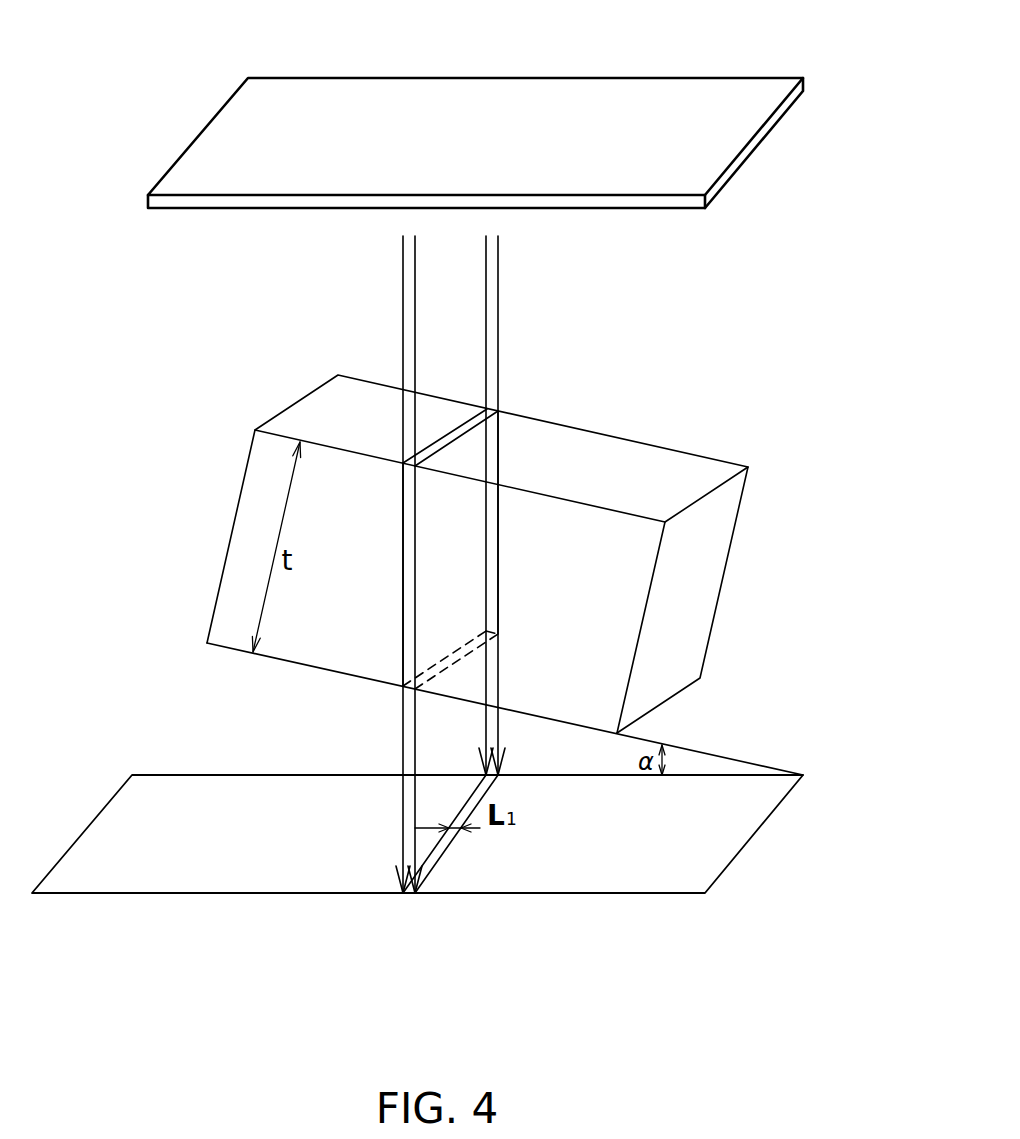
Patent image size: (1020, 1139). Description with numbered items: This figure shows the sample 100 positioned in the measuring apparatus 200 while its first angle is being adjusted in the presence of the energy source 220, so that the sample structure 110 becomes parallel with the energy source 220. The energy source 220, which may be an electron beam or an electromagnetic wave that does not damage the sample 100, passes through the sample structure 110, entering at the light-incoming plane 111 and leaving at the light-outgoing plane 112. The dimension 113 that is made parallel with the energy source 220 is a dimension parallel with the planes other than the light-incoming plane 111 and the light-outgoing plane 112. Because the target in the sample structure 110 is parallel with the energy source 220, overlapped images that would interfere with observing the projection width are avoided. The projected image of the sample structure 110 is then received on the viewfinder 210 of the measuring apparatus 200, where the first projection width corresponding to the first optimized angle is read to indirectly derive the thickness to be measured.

The sample 100 is at (700, 566).
The sample structure 110 is at (505, 447).
The light-incoming plane 111 is at (472, 423).
The light-outgoing plane 112 is at (472, 640).
The dimension 113 is at (496, 467).
The measuring apparatus 200 is at (728, 107).
The viewfinder 210 is at (727, 828).
The energy source 220 is at (500, 266).